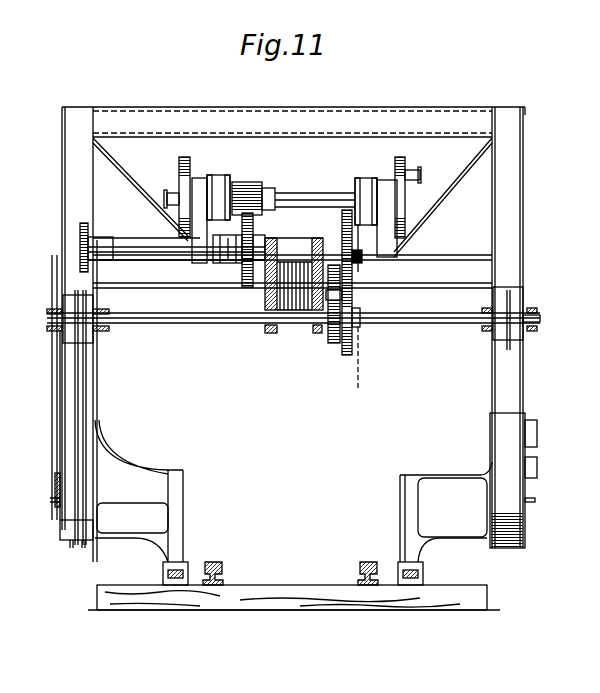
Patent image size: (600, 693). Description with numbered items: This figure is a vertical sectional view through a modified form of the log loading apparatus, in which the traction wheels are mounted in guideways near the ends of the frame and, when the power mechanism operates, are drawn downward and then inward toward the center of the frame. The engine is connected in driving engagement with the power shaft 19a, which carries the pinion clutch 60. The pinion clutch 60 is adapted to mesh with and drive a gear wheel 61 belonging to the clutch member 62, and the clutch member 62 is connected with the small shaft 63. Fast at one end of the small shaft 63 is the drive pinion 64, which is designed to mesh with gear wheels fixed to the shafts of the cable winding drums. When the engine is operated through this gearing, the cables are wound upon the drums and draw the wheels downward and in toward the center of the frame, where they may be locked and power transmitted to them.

The pinion clutch 60 is at (241, 185).
The power shaft 19a is at (300, 196).
The gear wheel 61 is at (254, 227).
The clutch member 62 is at (239, 258).
The small shaft 63 is at (295, 247).
The drive pinion 64 is at (362, 267).